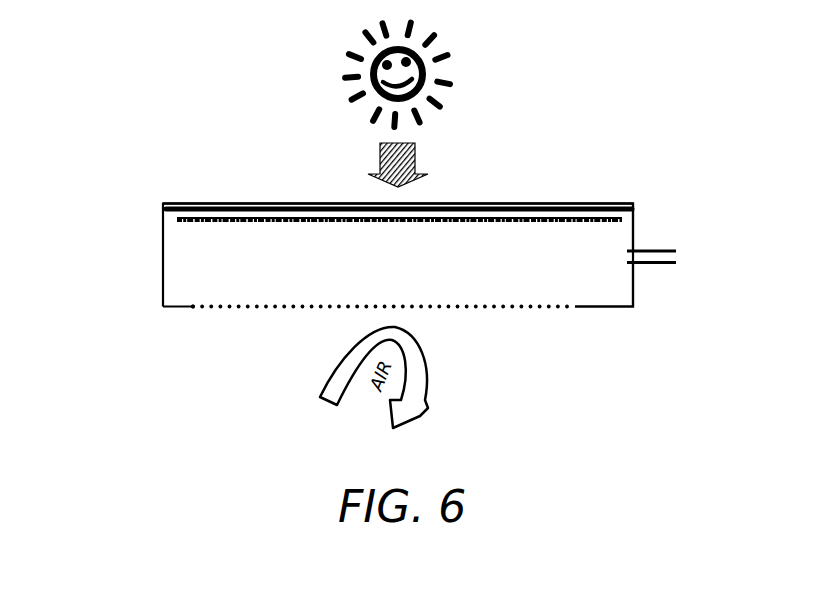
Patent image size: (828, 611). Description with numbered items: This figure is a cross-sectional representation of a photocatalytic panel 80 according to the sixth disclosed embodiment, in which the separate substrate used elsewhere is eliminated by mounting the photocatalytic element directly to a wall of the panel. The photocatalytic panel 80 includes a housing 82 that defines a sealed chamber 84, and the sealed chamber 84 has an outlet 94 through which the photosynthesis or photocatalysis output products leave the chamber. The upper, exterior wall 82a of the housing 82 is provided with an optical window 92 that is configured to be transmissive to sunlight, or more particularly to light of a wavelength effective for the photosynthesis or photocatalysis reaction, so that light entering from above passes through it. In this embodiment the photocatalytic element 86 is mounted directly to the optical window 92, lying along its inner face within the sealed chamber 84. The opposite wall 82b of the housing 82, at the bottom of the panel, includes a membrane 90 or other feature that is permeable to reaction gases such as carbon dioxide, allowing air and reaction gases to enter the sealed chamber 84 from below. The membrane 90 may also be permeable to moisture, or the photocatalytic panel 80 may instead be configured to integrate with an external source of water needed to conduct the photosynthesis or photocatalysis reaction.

The photocatalytic panel 80 is at (617, 308).
The housing 82 is at (161, 263).
The exterior wall 82a is at (608, 201).
The opposite wall 82b is at (592, 307).
The sealed chamber 84 is at (472, 283).
The photocatalytic element 86 is at (285, 223).
The membrane 90 is at (248, 308).
The optical window 92 is at (208, 203).
The outlet 94 is at (657, 249).